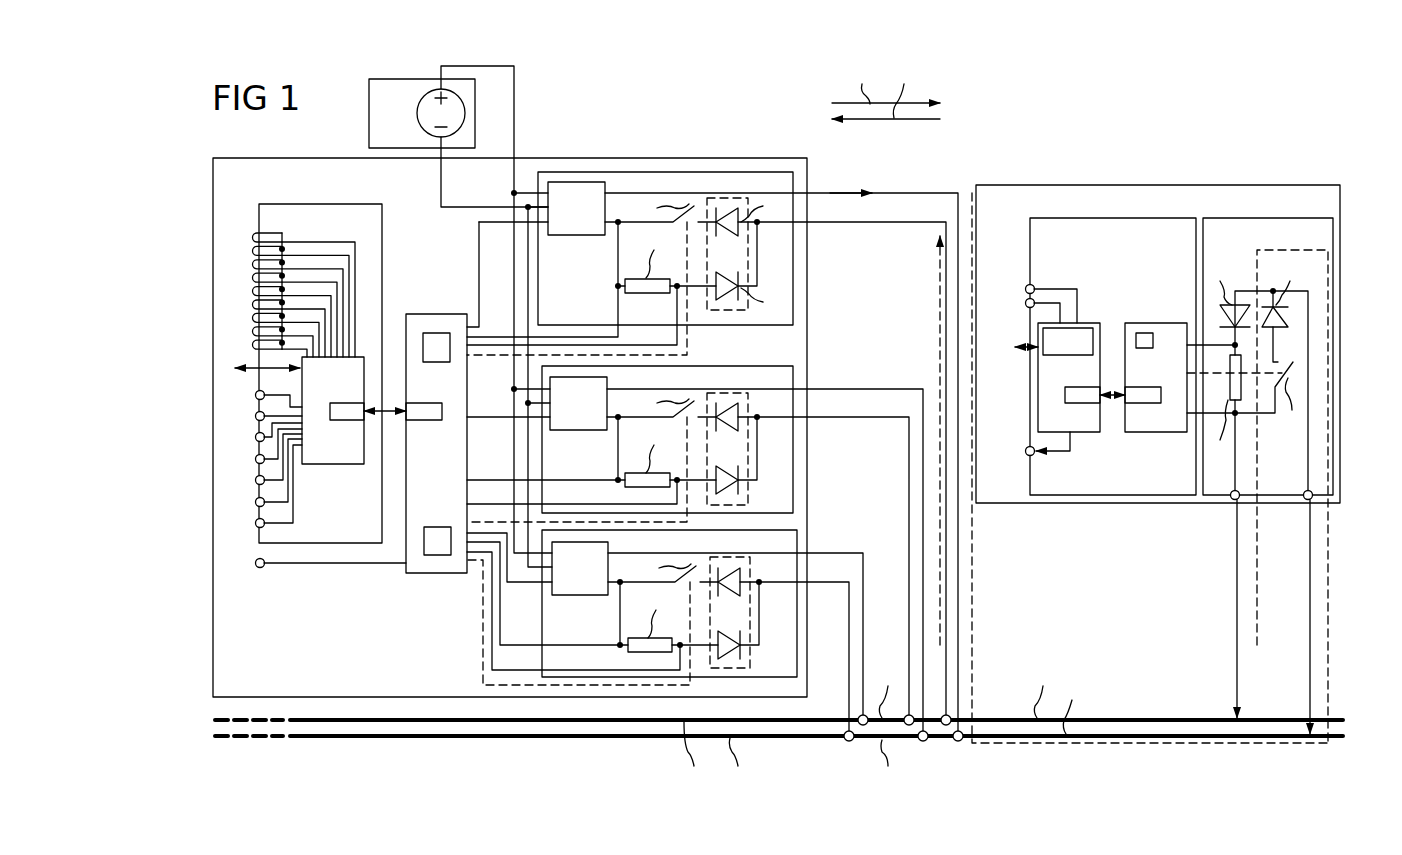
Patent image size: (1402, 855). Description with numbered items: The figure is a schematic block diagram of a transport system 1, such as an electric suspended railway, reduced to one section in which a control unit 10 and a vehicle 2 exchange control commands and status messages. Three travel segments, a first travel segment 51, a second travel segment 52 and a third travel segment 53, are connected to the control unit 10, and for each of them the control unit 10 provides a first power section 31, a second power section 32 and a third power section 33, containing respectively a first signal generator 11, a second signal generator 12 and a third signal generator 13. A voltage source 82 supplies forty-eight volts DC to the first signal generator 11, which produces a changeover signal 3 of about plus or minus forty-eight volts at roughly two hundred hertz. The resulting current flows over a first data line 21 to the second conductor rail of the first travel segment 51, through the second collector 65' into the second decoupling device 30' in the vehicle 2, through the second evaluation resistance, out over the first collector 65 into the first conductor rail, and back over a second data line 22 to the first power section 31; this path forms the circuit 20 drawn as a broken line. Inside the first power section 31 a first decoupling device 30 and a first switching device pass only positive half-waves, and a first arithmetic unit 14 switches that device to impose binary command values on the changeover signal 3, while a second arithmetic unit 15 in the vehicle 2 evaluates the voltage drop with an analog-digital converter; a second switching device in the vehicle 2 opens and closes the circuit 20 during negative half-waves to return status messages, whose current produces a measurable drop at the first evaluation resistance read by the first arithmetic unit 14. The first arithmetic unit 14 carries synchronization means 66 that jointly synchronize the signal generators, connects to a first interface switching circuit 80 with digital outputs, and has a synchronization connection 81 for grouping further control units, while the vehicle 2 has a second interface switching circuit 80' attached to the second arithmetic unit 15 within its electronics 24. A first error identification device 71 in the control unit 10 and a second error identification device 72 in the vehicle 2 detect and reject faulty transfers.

The transport system 1 is at (650, 134).
The vehicle 2 is at (1284, 184).
The changeover signal 3 is at (894, 174).
The control unit 10 is at (728, 158).
The first signal generator 11 is at (585, 235).
The second signal generator 12 is at (585, 430).
The third signal generator 13 is at (587, 595).
The first arithmetic unit 14 is at (430, 455).
The second arithmetic unit 15 is at (1156, 386).
The circuit 20 is at (970, 196).
The first data line 21 is at (920, 192).
The second data line 22 is at (918, 224).
The field device electronics 24 is at (1138, 218).
The first decoupling device 30 is at (778, 436).
The second decoupling device 30' is at (1260, 445).
The first power section 31 is at (712, 454).
The second power section 32 is at (695, 463).
The third power section 33 is at (665, 633).
The first travel segment 51 is at (1022, 748).
The second travel segment 52 is at (876, 746).
The third travel segment 53 is at (662, 746).
The first collector 65 is at (1223, 609).
The second collector 65' is at (1298, 617).
The synchronization means 66 is at (437, 555).
The first error identification device 71 is at (436, 333).
The second error identification device 72 is at (1145, 332).
The first interface switching circuit 80 is at (312, 373).
The second interface switching circuit 80' is at (1070, 411).
The synchronization connection 81 is at (258, 568).
The voltage source 82 is at (369, 120).